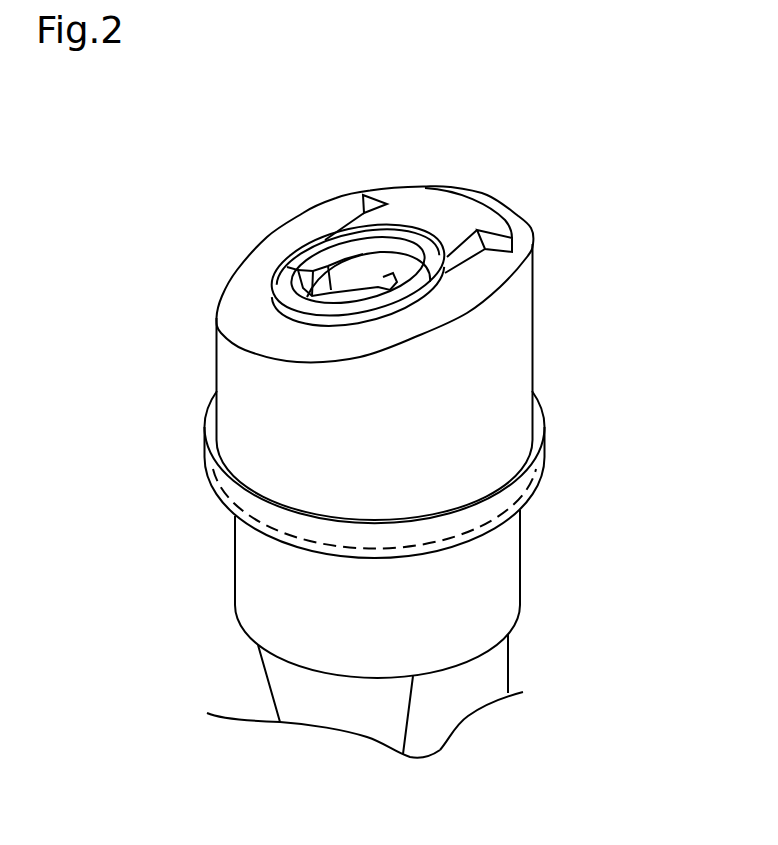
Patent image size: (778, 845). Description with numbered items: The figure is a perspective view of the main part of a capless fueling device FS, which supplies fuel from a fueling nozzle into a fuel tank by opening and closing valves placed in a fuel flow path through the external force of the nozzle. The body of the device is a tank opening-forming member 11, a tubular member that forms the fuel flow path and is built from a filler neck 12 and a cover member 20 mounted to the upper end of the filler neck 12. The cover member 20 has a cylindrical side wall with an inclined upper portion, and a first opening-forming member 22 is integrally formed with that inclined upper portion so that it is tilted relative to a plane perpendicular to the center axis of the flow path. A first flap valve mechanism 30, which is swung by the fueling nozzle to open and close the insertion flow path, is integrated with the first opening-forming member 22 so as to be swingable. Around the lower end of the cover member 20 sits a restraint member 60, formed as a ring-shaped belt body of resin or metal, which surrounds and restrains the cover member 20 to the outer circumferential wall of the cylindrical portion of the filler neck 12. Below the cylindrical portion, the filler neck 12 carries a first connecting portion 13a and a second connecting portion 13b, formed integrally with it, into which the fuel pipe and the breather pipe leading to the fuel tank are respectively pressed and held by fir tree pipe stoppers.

The fueling device FS is at (143, 248).
The tank opening-forming member 11 is at (440, 426).
The cover member 20 is at (440, 347).
The filler neck 12 is at (507, 553).
The first opening-forming member 22 is at (518, 225).
The first flap valve mechanism 30 is at (386, 269).
The restraint member 60 is at (210, 472).
The first connecting portion 13a is at (307, 705).
The second connecting portion 13b is at (472, 702).